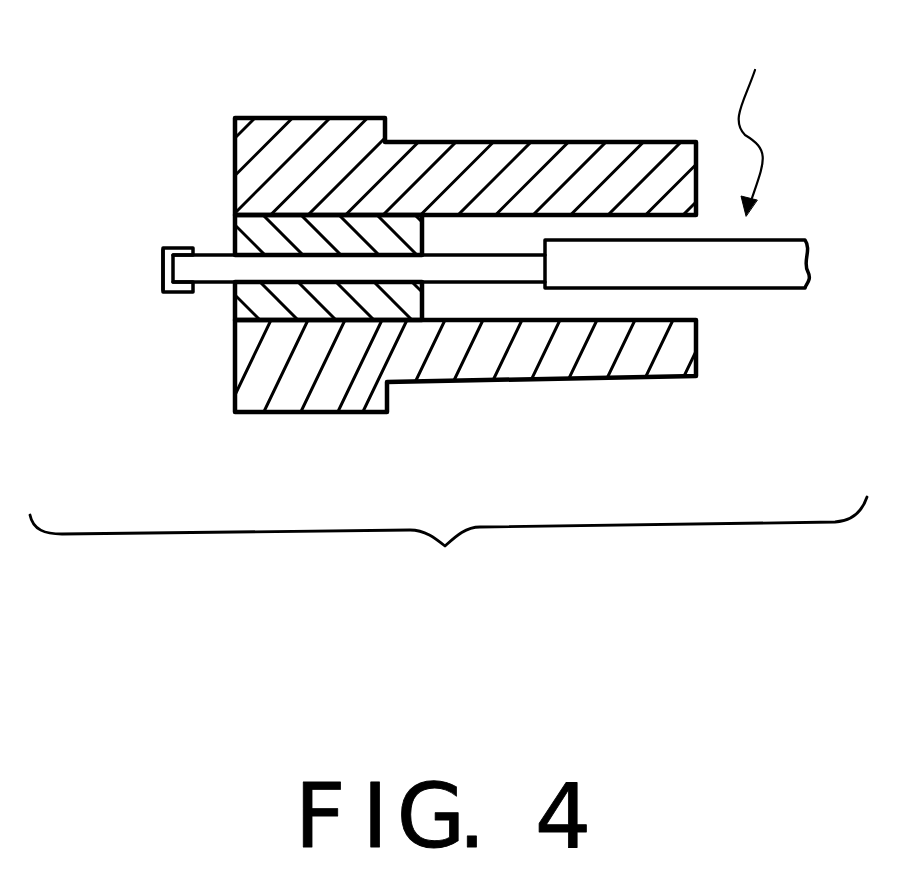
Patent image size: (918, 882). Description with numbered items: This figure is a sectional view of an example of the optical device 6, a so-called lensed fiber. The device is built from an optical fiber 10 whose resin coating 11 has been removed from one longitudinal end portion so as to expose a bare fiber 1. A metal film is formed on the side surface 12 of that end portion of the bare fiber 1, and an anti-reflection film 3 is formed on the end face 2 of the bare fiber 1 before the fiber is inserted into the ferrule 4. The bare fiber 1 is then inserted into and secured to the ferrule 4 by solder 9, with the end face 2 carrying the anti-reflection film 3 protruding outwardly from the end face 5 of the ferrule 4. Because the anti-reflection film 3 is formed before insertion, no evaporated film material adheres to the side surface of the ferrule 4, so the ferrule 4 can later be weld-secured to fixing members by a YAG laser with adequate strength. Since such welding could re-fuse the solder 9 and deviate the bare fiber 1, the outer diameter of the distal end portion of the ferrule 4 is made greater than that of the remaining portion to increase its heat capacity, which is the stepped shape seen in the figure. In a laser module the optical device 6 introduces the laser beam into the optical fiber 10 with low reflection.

The bare fiber 1 is at (475, 282).
The end face 2 is at (163, 290).
The anti-reflection film 3 is at (163, 268).
The ferrule 4 is at (532, 142).
The end face of the ferrule 5 is at (235, 357).
The optical device 6 is at (448, 551).
The solder 9 is at (235, 238).
The optical fiber 10 is at (767, 122).
The resin coating 11 is at (778, 240).
The side surface 12 is at (338, 264).